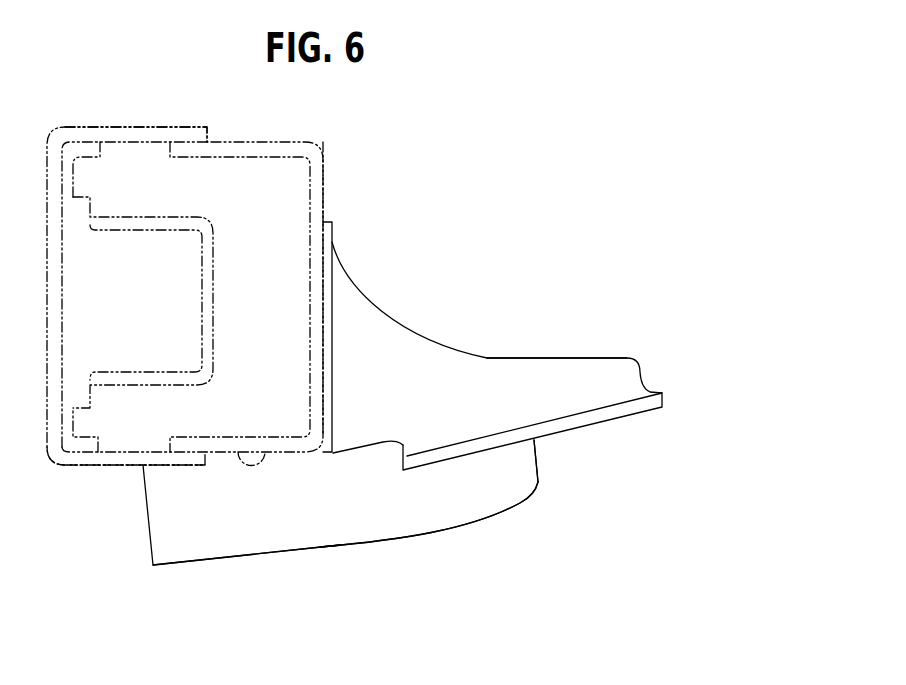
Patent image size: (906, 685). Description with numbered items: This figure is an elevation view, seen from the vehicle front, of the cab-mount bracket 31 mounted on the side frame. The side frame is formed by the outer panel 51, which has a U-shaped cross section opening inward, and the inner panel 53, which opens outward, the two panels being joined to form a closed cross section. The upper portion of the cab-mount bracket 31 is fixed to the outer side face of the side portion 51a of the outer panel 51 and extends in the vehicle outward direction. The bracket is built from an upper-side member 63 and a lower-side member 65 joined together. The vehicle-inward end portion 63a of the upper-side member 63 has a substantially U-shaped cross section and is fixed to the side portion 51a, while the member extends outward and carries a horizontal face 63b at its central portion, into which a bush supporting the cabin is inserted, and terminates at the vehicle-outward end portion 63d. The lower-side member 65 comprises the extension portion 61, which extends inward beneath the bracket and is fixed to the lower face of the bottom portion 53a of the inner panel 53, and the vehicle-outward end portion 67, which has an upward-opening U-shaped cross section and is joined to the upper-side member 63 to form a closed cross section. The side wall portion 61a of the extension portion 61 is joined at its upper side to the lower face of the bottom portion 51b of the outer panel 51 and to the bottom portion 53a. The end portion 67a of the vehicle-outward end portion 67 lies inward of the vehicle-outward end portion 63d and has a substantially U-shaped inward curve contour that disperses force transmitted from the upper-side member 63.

The cab-mount bracket 31 is at (655, 252).
The outer panel 51 is at (342, 167).
The side portion of the outer panel 51a is at (323, 192).
The bottom portion of the outer panel 51b is at (265, 450).
The inner panel 53 is at (157, 118).
The bottom portion of the inner panel 53a is at (92, 468).
The extension portion 61 is at (333, 588).
The side wall portion of the extension portion 61a is at (197, 500).
The upper-side member 63 is at (387, 315).
The vehicle-inward end portion of the upper-side member 63a is at (333, 307).
The horizontal face 63b is at (548, 357).
The vehicle-outward end portion of the upper-side member 63d is at (670, 393).
The lower-side member 65 is at (520, 498).
The vehicle-outward end portion 67 is at (542, 588).
The end portion of the vehicle-outward end portion 67a is at (548, 462).